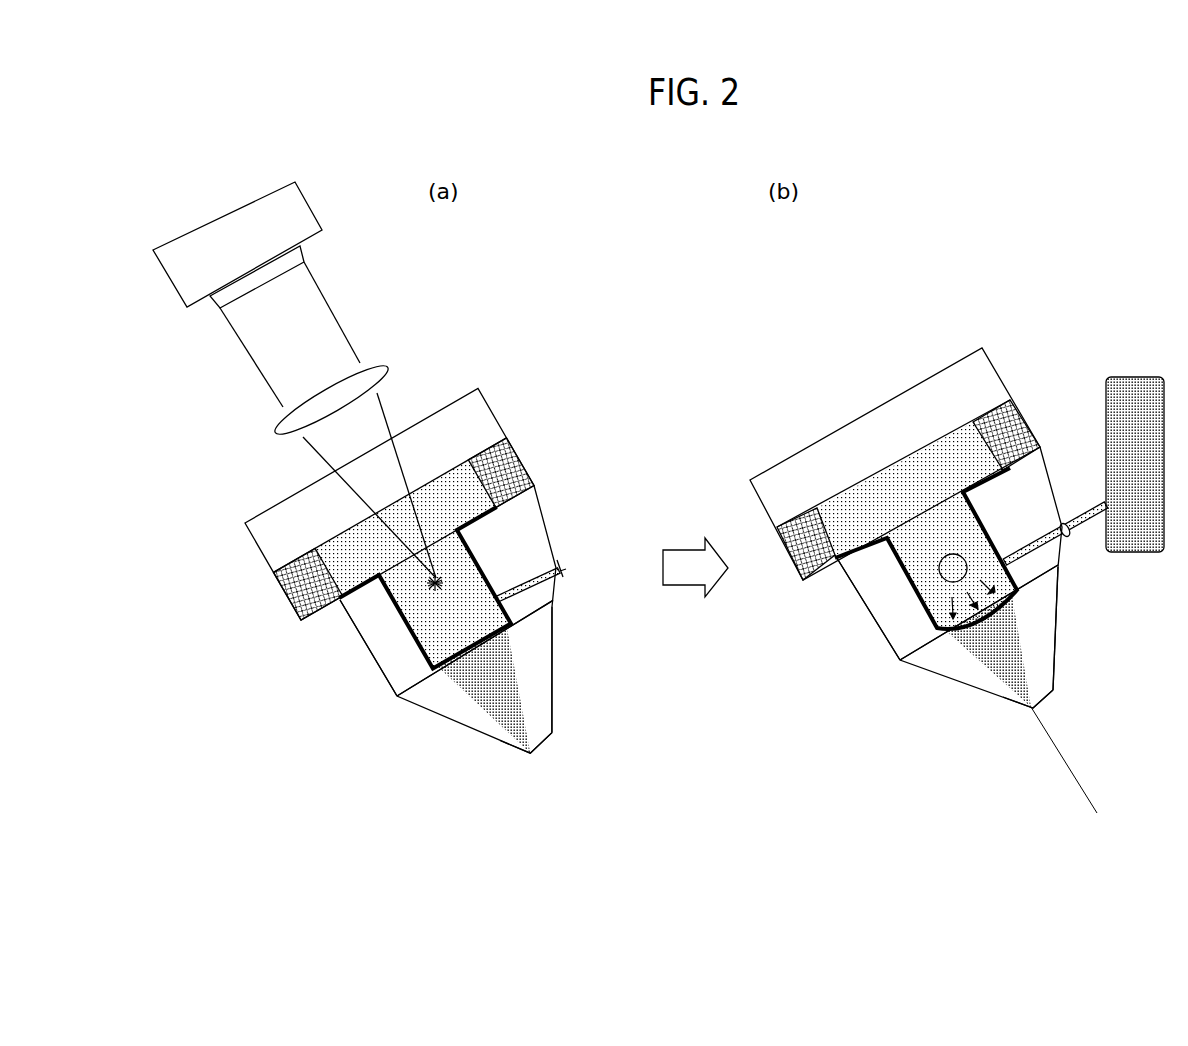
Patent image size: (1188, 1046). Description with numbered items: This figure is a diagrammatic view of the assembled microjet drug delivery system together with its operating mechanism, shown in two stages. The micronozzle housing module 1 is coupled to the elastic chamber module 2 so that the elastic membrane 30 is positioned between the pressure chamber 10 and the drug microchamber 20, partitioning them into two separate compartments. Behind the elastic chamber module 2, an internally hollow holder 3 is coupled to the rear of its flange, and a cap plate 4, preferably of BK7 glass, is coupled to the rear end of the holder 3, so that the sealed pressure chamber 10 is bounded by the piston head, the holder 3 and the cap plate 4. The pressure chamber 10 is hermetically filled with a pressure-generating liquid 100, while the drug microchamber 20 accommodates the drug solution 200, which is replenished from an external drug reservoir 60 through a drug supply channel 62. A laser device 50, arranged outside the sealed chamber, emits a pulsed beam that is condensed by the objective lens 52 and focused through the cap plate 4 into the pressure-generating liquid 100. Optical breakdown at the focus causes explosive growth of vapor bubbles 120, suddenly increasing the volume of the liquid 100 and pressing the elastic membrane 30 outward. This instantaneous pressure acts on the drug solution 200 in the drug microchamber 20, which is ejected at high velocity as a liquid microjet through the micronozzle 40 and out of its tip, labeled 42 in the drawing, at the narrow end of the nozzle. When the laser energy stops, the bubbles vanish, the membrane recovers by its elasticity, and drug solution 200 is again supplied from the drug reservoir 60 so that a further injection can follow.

The micronozzle housing module 1 is at (383, 690).
The elastic chamber module 2 is at (345, 605).
The holder 3 is at (528, 455).
The cap plate 4 is at (480, 400).
The pressure chamber 10 is at (487, 565).
The drug microchamber 20 is at (560, 682).
The elastic membrane 30 is at (383, 688).
The micronozzle 40 is at (540, 737).
The nozzle outlet 42 is at (513, 748).
The laser device 50 is at (310, 203).
The objective lens 52 is at (378, 365).
The drug reservoir 60 is at (1133, 376).
The drug supply channel 62 is at (549, 599).
The pressure-generating liquid 100 is at (370, 556).
The vapor bubbles 120 is at (935, 570).
The drug solution 200 is at (457, 693).